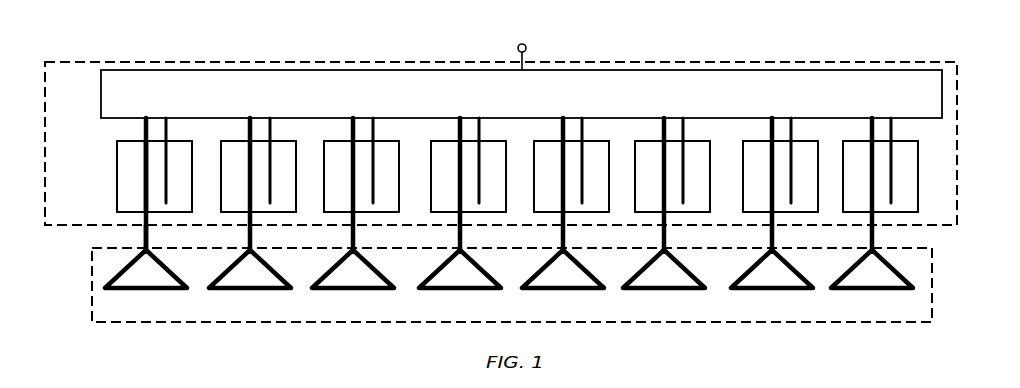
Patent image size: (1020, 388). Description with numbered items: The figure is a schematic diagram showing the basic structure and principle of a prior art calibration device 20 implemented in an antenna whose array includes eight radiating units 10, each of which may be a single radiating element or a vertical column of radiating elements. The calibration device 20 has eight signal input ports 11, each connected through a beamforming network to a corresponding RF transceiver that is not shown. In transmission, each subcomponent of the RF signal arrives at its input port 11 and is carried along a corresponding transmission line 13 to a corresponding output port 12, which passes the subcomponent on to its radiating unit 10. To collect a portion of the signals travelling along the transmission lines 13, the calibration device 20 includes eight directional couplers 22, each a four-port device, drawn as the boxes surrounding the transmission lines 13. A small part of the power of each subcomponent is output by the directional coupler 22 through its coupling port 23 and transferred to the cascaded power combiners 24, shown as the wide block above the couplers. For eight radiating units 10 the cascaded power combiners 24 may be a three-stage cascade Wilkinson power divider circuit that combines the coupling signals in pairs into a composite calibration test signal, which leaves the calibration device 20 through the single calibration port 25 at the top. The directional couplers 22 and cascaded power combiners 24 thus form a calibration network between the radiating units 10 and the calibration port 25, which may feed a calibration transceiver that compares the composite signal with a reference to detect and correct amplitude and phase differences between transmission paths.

The radiating unit 10 is at (512, 285).
The signal input port 11 is at (144, 131).
The output port 12 is at (144, 247).
The transmission line 13 is at (144, 192).
The calibration device 20 is at (501, 143).
The directional coupler 22 is at (117, 166).
The coupling port 23 is at (168, 127).
The cascaded power combiners 24 is at (521, 94).
The calibration port 25 is at (522, 47).